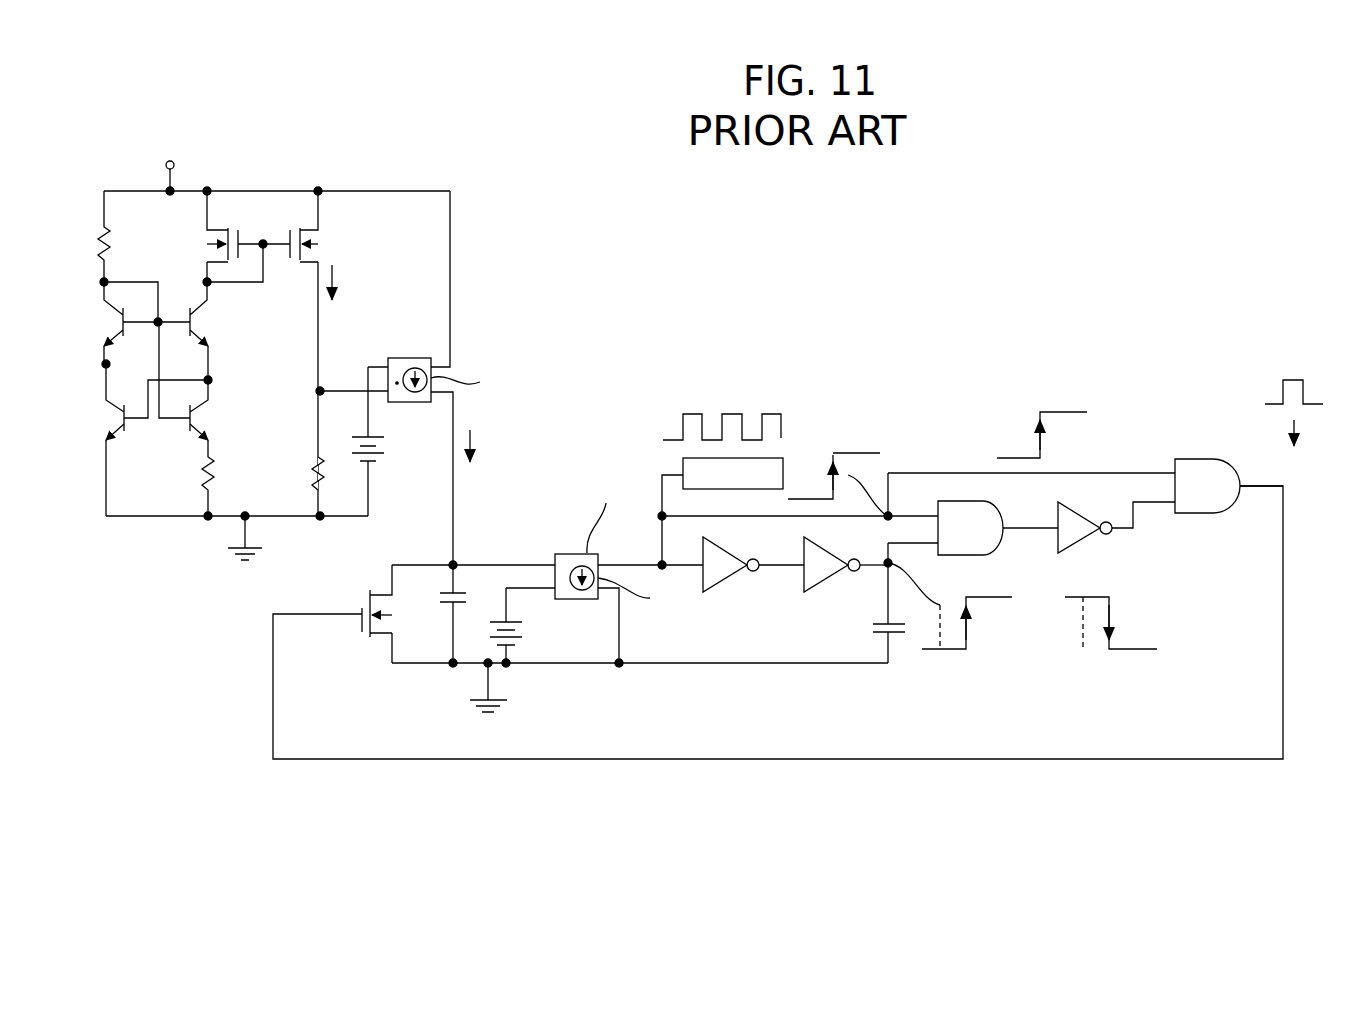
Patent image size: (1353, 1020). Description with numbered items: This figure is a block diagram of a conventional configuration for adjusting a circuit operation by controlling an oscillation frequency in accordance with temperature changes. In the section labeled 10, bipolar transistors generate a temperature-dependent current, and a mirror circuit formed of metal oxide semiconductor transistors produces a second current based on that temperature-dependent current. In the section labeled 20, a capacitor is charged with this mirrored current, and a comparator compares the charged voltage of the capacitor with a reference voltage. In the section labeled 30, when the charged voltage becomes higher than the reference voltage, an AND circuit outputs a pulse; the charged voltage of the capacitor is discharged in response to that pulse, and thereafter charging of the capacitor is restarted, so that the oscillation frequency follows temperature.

The PTAT current generating circuit 10 is at (287, 158).
The transconductance amplifier and comparator circuit 20 is at (497, 343).
The oscillator logic circuit 30 is at (900, 407).